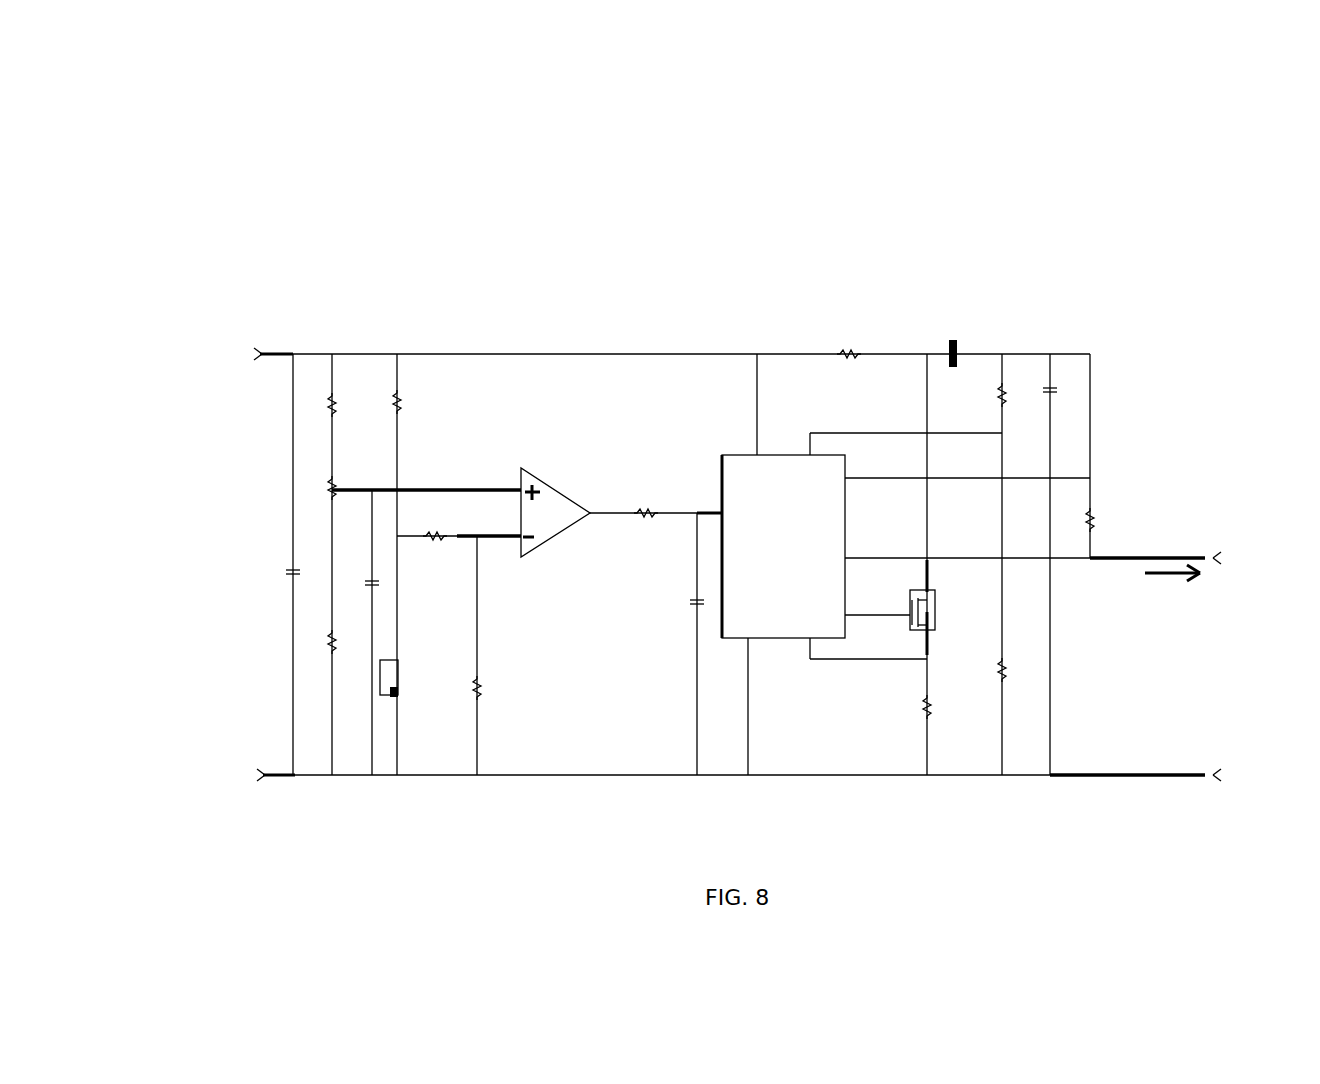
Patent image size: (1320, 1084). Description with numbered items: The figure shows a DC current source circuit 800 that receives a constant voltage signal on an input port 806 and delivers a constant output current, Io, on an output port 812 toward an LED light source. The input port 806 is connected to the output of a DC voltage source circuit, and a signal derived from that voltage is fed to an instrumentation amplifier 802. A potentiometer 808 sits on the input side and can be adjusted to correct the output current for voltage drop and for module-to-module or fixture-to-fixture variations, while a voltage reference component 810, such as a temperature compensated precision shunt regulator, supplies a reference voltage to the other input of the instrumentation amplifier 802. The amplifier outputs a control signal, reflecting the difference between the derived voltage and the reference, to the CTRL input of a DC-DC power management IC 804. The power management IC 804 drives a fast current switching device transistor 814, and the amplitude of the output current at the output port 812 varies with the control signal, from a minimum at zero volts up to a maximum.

The DC current source circuit 800 is at (302, 165).
The instrumentation amplifier 802 is at (548, 486).
The DC-DC power management IC 804 is at (733, 455).
The input port 806 is at (258, 350).
The potentiometer 808 is at (335, 490).
The voltage reference component 810 is at (398, 695).
The output port 812 is at (1170, 557).
The fast current switching device transistor 814 is at (933, 615).